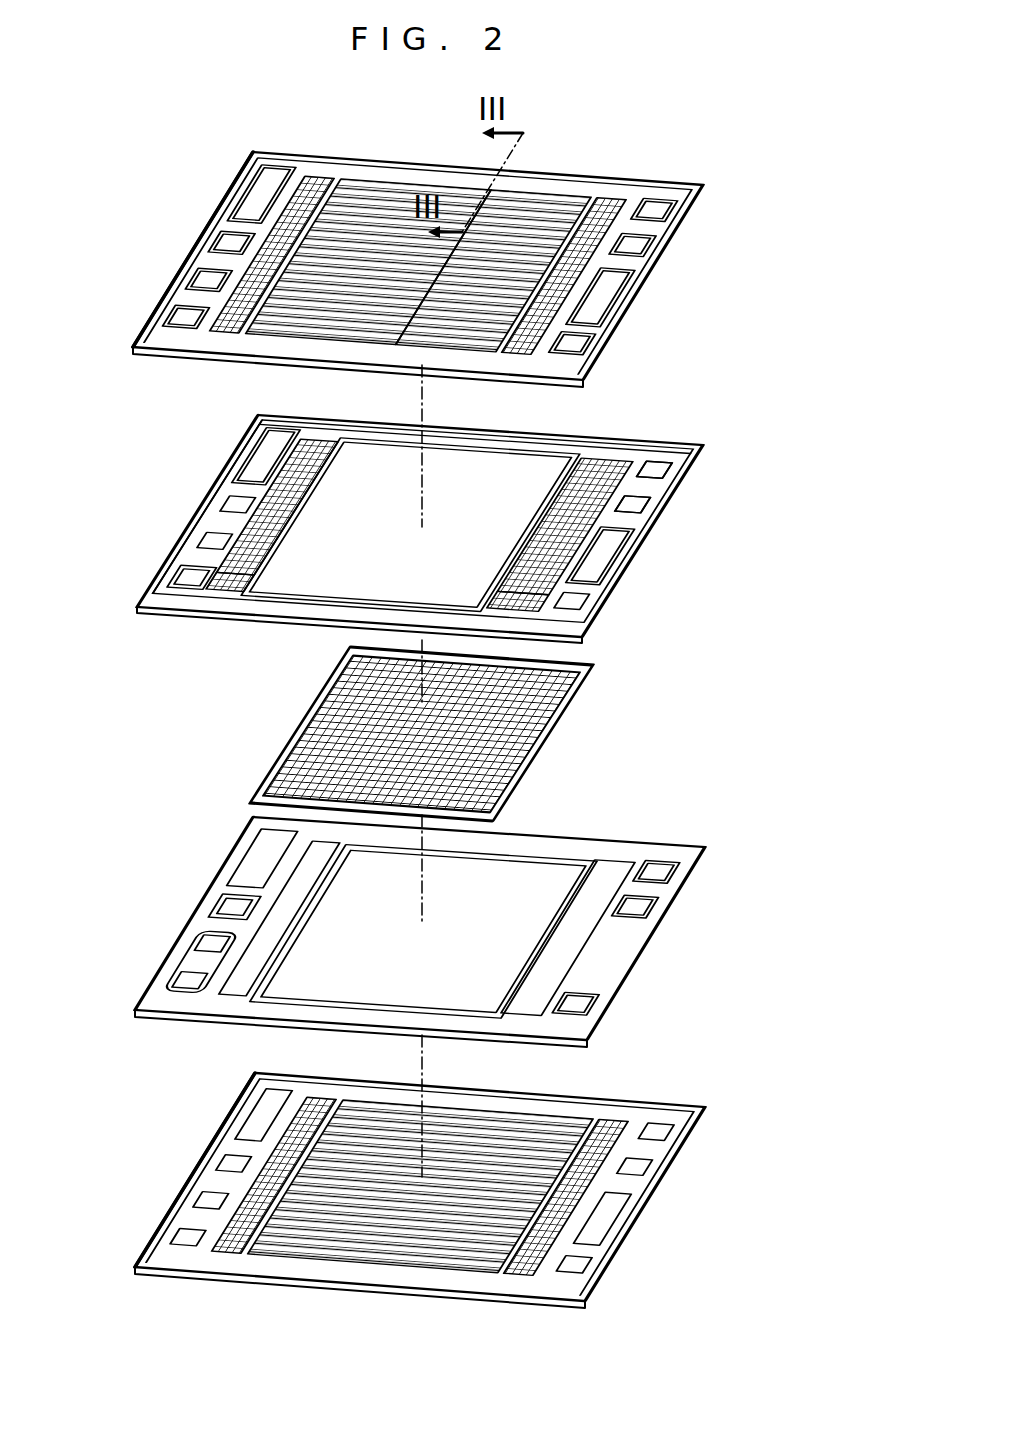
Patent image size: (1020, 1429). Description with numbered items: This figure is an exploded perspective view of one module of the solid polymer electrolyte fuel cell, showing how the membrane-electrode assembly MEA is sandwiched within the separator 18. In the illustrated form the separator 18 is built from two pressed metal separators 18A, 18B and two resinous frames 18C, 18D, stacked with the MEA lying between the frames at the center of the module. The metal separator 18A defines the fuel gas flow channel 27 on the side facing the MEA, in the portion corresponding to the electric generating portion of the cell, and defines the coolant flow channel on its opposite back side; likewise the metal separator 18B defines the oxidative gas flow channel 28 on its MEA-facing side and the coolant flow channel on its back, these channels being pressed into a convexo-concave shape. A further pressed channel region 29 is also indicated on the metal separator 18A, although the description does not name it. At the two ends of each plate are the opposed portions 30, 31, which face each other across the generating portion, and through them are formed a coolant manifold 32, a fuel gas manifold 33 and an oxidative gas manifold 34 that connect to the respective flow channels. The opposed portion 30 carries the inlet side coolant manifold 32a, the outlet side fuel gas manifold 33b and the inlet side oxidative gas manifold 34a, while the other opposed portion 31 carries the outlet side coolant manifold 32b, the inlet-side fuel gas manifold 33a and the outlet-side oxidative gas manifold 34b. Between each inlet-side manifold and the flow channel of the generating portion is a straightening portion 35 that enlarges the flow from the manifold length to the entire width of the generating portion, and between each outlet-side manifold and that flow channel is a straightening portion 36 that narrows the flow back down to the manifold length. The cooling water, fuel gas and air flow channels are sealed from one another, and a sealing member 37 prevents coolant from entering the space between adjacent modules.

The separator 18 is at (203, 240).
The metal separator 18A is at (431, 1174).
The metal separator 18B is at (455, 286).
The resinous frame 18C is at (637, 967).
The resinous frame 18D is at (427, 526).
The fuel gas flow channel 27 is at (277, 1183).
The oxidative gas flow channel 28 is at (451, 293).
The fuel gas flow passage 29 is at (380, 1147).
The opposed portion 30 is at (600, 457).
The opposed portion 31 is at (307, 437).
The coolant manifold 32 is at (600, 555).
The inlet side coolant manifold 32a is at (600, 297).
The outlet side coolant manifold 32b is at (260, 200).
The fuel gas manifold 33 is at (228, 483).
The inlet-side fuel gas manifold 33a is at (237, 507).
The outlet side fuel gas manifold 33b is at (578, 604).
The oxidative gas manifold 34 is at (187, 582).
The inlet side oxidative gas manifold 34a is at (633, 497).
The outlet-side oxidative gas manifold 34b is at (190, 577).
The straightening portion 35 is at (542, 610).
The straightening portion 36 is at (204, 593).
The sealing member 37 is at (548, 563).
The membrane-electrode assembly MEA is at (575, 727).